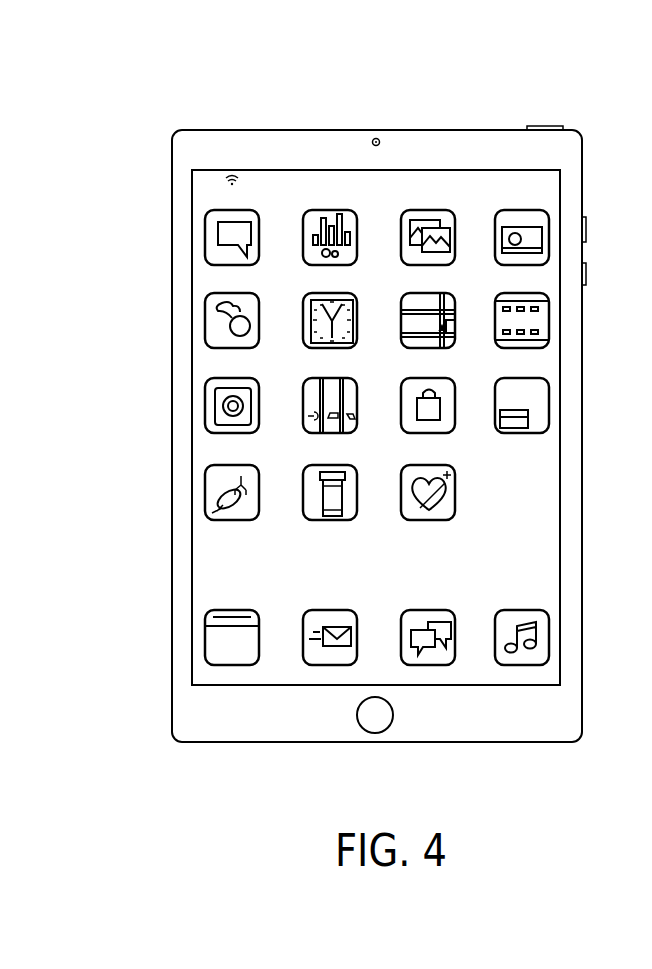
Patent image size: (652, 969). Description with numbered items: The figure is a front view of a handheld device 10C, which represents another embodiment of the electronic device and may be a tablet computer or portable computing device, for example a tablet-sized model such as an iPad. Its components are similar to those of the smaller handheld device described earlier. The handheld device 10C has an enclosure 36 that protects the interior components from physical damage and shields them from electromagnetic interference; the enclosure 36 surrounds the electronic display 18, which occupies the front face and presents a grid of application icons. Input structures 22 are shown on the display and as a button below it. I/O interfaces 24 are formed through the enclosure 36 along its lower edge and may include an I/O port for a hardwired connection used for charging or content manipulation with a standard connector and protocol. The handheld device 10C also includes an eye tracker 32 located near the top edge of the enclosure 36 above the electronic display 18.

The handheld device 10C is at (180, 90).
The electronic display 18 is at (560, 358).
The input structures 22 is at (550, 318).
The I/O interfaces 24 is at (375, 743).
The eye tracker 32 is at (372, 139).
The enclosure 36 is at (463, 130).